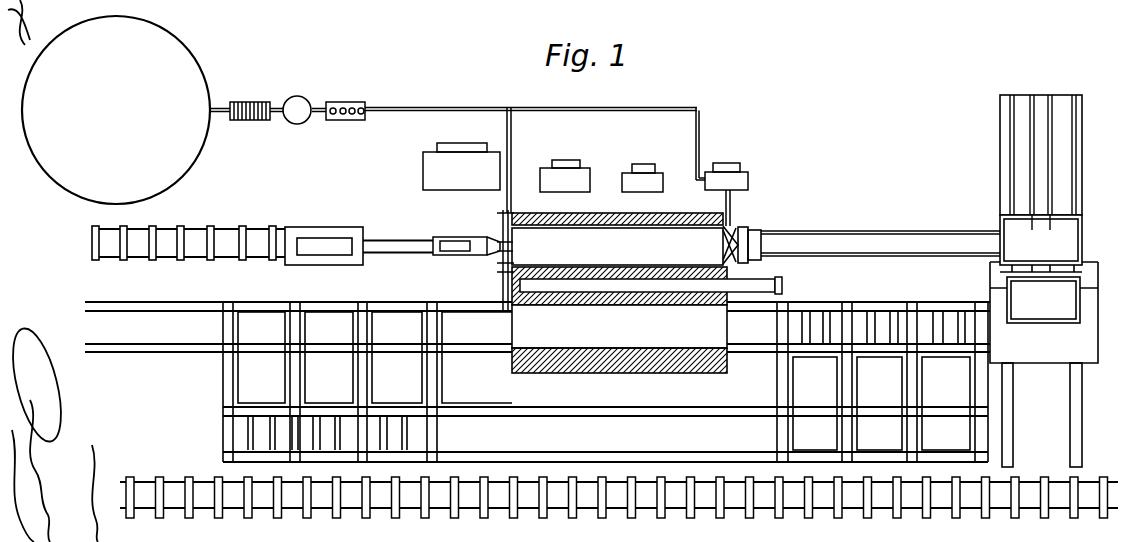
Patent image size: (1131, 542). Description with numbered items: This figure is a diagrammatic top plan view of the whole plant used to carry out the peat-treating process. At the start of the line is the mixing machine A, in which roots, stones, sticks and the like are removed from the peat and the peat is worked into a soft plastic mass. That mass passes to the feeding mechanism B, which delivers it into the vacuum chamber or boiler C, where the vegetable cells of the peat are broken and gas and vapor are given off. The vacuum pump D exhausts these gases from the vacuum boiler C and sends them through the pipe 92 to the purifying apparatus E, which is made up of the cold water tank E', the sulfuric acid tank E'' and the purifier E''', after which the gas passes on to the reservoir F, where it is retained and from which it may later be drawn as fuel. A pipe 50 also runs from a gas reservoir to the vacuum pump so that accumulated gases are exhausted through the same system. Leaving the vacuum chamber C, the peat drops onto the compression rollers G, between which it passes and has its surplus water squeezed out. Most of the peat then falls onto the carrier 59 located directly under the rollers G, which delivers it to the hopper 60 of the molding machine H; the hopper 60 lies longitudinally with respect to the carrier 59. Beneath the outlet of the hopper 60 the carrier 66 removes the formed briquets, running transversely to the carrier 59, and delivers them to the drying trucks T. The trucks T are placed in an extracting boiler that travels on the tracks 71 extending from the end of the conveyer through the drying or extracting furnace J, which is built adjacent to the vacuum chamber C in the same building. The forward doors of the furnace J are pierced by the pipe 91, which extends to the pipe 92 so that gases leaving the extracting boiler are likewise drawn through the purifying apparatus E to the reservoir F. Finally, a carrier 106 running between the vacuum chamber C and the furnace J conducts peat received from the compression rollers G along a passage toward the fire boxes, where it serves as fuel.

The reservoir F is at (116, 110).
The purifying apparatus E is at (268, 128).
The cold water tank E' is at (353, 92).
The sulfuric acid tank E'' is at (308, 96).
The purifier E''' is at (255, 94).
The mixing machine A is at (300, 228).
The feeding mechanism B is at (457, 236).
The vacuum chamber or boiler C is at (625, 239).
The vacuum pump D is at (742, 178).
The compression rollers G is at (746, 225).
The molding machine H is at (1076, 244).
The drying or extracting furnace J is at (619, 339).
The drying trucks T is at (1046, 312).
The pipe 92 is at (547, 110).
The pipe 50 is at (724, 202).
The carrier 59 is at (869, 233).
The hopper 60 is at (1055, 237).
The carrier 66 is at (1025, 178).
The tracks 71 is at (878, 304).
The carrier 106 is at (785, 282).
The pipe 91 is at (510, 325).